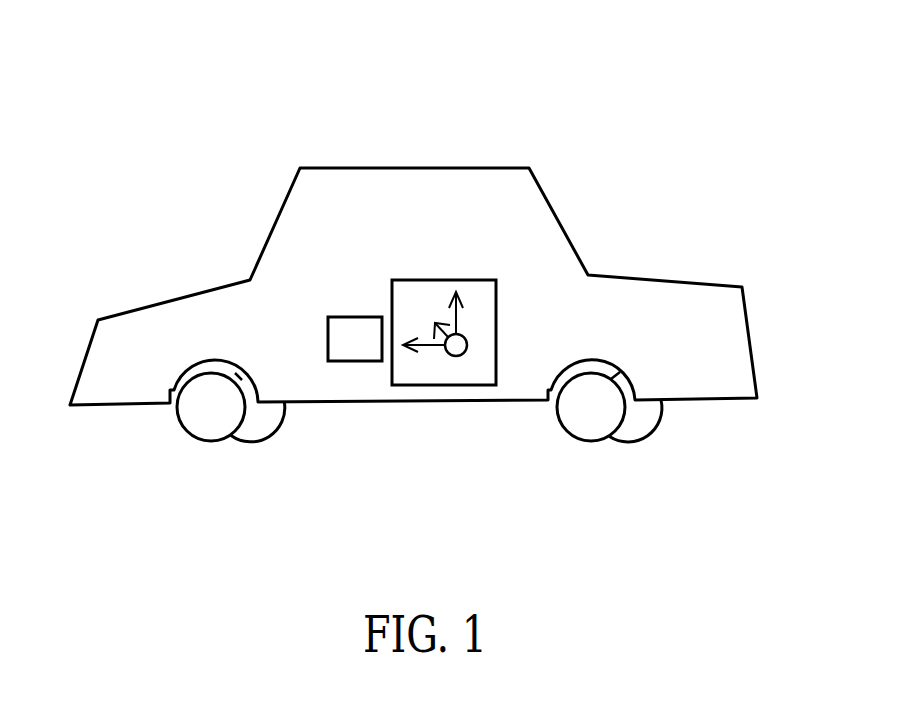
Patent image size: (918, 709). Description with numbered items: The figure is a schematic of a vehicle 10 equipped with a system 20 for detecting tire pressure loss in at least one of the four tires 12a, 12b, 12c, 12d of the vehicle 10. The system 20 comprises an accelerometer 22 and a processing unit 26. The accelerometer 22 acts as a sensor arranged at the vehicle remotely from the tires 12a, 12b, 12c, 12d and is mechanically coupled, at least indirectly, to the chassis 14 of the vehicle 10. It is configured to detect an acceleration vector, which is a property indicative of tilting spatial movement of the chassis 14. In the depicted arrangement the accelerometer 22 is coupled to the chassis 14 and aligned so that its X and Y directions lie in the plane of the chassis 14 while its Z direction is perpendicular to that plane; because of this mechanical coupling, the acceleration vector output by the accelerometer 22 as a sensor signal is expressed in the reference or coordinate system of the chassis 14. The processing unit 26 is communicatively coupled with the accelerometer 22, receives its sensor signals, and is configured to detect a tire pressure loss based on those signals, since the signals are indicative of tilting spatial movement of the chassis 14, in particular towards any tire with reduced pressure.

The vehicle 10 is at (113, 108).
The tire 12a is at (183, 430).
The tire 12b is at (282, 430).
The tire 12c is at (555, 407).
The tire 12d is at (653, 433).
The chassis 14 is at (152, 377).
The system 20 is at (424, 252).
The accelerometer 22 is at (503, 332).
The processing unit 26 is at (327, 338).